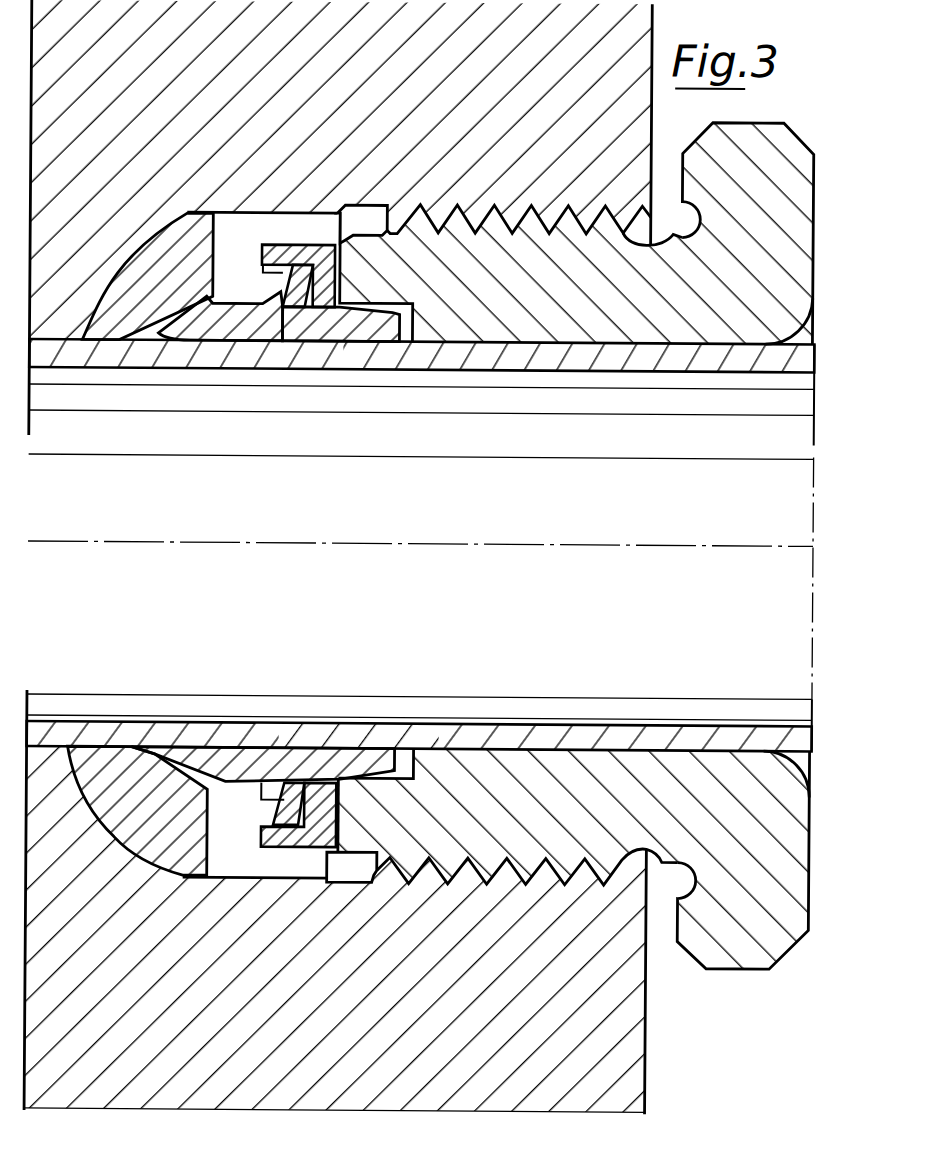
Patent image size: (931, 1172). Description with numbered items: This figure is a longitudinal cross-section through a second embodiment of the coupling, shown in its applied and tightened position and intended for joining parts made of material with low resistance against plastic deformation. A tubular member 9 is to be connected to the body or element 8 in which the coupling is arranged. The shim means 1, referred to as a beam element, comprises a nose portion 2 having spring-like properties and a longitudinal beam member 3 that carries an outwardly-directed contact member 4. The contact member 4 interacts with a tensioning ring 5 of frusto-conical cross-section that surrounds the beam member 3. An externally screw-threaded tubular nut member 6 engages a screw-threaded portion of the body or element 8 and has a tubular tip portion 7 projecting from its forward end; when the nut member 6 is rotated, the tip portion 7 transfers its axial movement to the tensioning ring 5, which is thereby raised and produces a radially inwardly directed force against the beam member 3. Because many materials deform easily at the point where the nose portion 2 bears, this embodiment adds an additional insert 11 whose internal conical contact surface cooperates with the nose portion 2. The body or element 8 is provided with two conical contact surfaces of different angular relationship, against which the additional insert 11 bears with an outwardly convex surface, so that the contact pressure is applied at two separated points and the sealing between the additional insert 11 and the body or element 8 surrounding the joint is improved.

The shim means 1 is at (317, 757).
The nose portion 2 is at (178, 343).
The longitudinal beam member 3 is at (265, 345).
The contact member 4 is at (259, 303).
The tensioning ring 5 is at (261, 264).
The tubular nut member 6 is at (704, 932).
The tubular tip portion 7 is at (312, 252).
The body or element 8 is at (626, 1016).
The tubular member 9 is at (521, 740).
The additional insert 11 is at (131, 782).